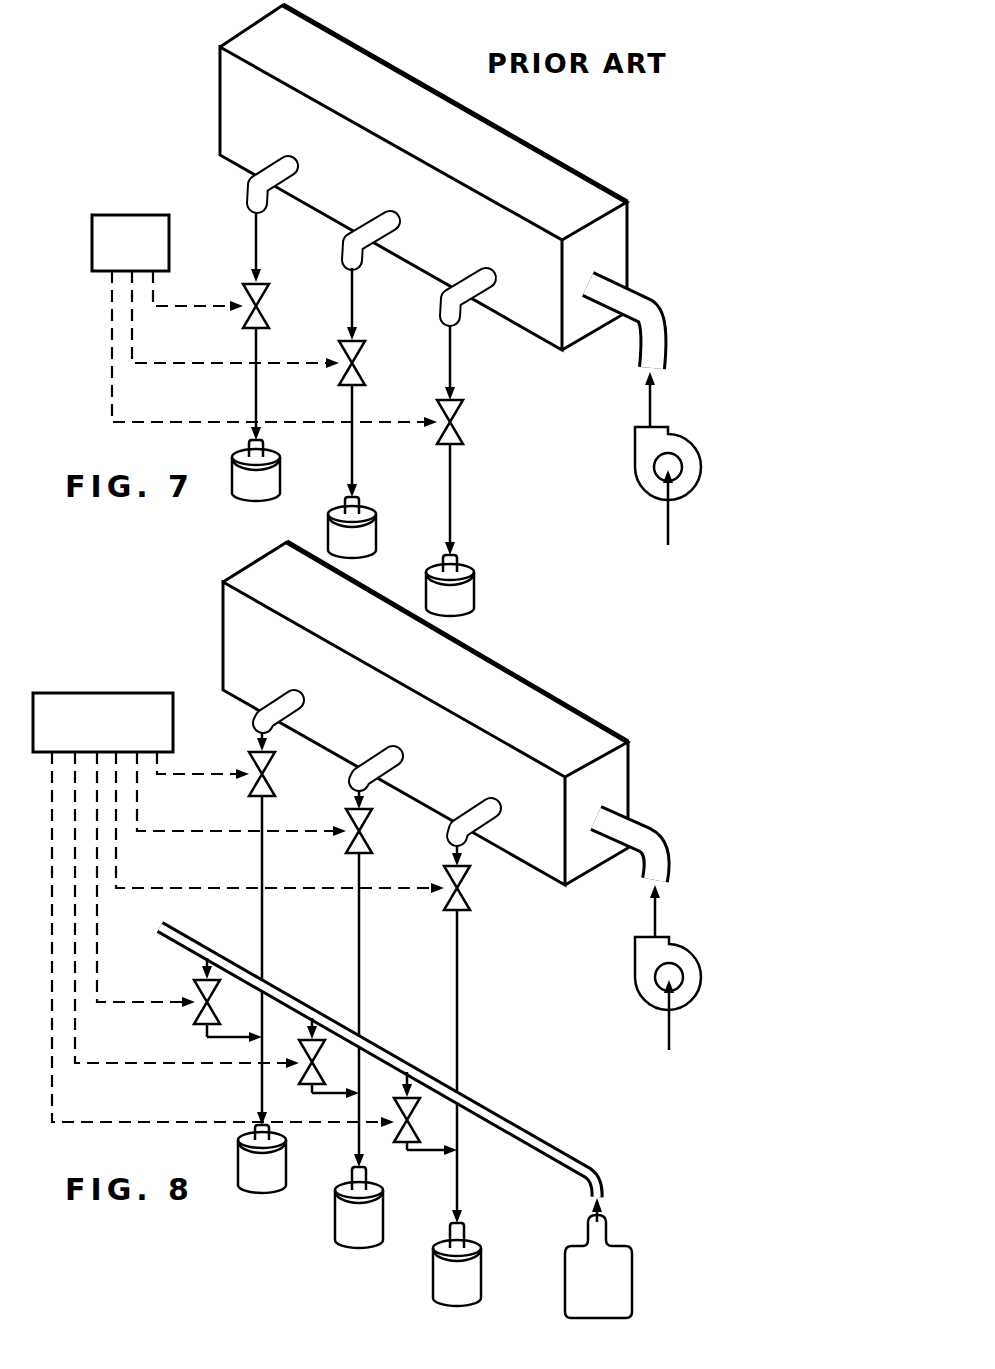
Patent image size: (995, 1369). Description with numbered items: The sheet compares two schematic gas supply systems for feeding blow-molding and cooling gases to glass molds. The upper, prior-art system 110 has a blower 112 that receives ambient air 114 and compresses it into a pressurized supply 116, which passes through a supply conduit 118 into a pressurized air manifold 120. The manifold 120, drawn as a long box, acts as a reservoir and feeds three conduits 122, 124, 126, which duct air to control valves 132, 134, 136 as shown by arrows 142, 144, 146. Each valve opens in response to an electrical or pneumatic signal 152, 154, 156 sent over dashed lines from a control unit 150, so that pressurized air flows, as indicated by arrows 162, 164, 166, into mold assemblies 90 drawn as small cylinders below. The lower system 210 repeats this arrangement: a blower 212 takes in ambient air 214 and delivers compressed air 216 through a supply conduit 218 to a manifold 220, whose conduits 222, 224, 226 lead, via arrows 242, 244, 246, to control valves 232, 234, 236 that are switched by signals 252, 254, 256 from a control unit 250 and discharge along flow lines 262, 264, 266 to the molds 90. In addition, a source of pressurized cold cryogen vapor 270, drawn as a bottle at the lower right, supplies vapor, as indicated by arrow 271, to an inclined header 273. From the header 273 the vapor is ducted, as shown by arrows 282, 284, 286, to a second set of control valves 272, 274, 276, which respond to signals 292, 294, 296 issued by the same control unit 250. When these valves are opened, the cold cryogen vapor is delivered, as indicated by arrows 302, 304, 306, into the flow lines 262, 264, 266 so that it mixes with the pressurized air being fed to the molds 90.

In FIG. 7, the mold assembly 90 is at (287, 476).
In FIG. 8, the mold assembly 90 is at (289, 1162).
In FIG. 7, the conventional gas supply system 110 is at (473, 177).
In FIG. 7, the blower 112 is at (695, 476).
In FIG. 7, the ambient air 114 is at (668, 518).
In FIG. 7, the pressurized supply of ambient air 116 is at (652, 408).
In FIG. 7, the supply conduit 118 is at (648, 300).
In FIG. 7, the pressurized air manifold 120 is at (612, 238).
In FIG. 7, the conduit 122 is at (440, 298).
In FIG. 7, the conduit 124 is at (345, 255).
In FIG. 7, the conduit 126 is at (246, 190).
In FIG. 7, the control valve 132 is at (445, 400).
In FIG. 7, the control valve 134 is at (346, 348).
In FIG. 7, the control valve 136 is at (246, 290).
In FIG. 7, the arrow 142 is at (450, 347).
In FIG. 7, the arrow 144 is at (352, 297).
In FIG. 7, the arrow 146 is at (256, 233).
In FIG. 7, the control unit 150 is at (92, 253).
In FIG. 7, the electrical or pneumatic signal 152 is at (170, 423).
In FIG. 7, the electrical or pneumatic signal 154 is at (188, 364).
In FIG. 7, the electrical or pneumatic signal 156 is at (208, 308).
In FIG. 7, the arrow 162 is at (450, 482).
In FIG. 7, the arrow 164 is at (352, 440).
In FIG. 7, the arrow 166 is at (256, 406).
In FIG. 8, the gas supply system 210 is at (467, 713).
In FIG. 8, the blower 212 is at (700, 990).
In FIG. 8, the ambient air 214 is at (669, 1050).
In FIG. 8, the pressurized supply of ambient air 216 is at (657, 907).
In FIG. 8, the supply conduit 218 is at (660, 833).
In FIG. 8, the pressurized air manifold 220 is at (625, 773).
In FIG. 8, the conduit 222 is at (446, 828).
In FIG. 8, the conduit 224 is at (348, 772).
In FIG. 8, the conduit 226 is at (250, 713).
In FIG. 8, the control valve 232 is at (446, 880).
In FIG. 8, the control valve 234 is at (350, 822).
In FIG. 8, the control valve 236 is at (250, 765).
In FIG. 8, the arrow 242 is at (455, 853).
In FIG. 8, the arrow 244 is at (357, 796).
In FIG. 8, the arrow 246 is at (262, 736).
In FIG. 8, the control unit 250 is at (68, 694).
In FIG. 8, the electrical or pneumatic signal 252 is at (158, 892).
In FIG. 8, the electrical or pneumatic signal 254 is at (199, 832).
In FIG. 8, the electrical or pneumatic signal 256 is at (205, 776).
In FIG. 8, the flow line 262 is at (459, 1050).
In FIG. 8, the flow line 264 is at (360, 998).
In FIG. 8, the flow line 266 is at (262, 956).
In FIG. 8, the source of pressurized cold cryogen vapor 270 is at (637, 1242).
In FIG. 8, the arrow 271 is at (601, 1215).
In FIG. 8, the control valve 272 is at (408, 1146).
In FIG. 8, the header 273 is at (556, 1155).
In FIG. 8, the control valve 274 is at (312, 1086).
In FIG. 8, the control valve 276 is at (192, 1018).
In FIG. 8, the arrow 282 is at (407, 1096).
In FIG. 8, the arrow 284 is at (312, 1038).
In FIG. 8, the arrow 286 is at (200, 968).
In FIG. 8, the electrical or pneumatic signal 292 is at (92, 1124).
In FIG. 8, the electrical or pneumatic signal 294 is at (129, 1064).
In FIG. 8, the electrical or pneumatic signal 296 is at (136, 1003).
In FIG. 8, the arrow 302 is at (415, 1156).
In FIG. 8, the arrow 304 is at (320, 1100).
In FIG. 8, the arrow 306 is at (230, 1040).